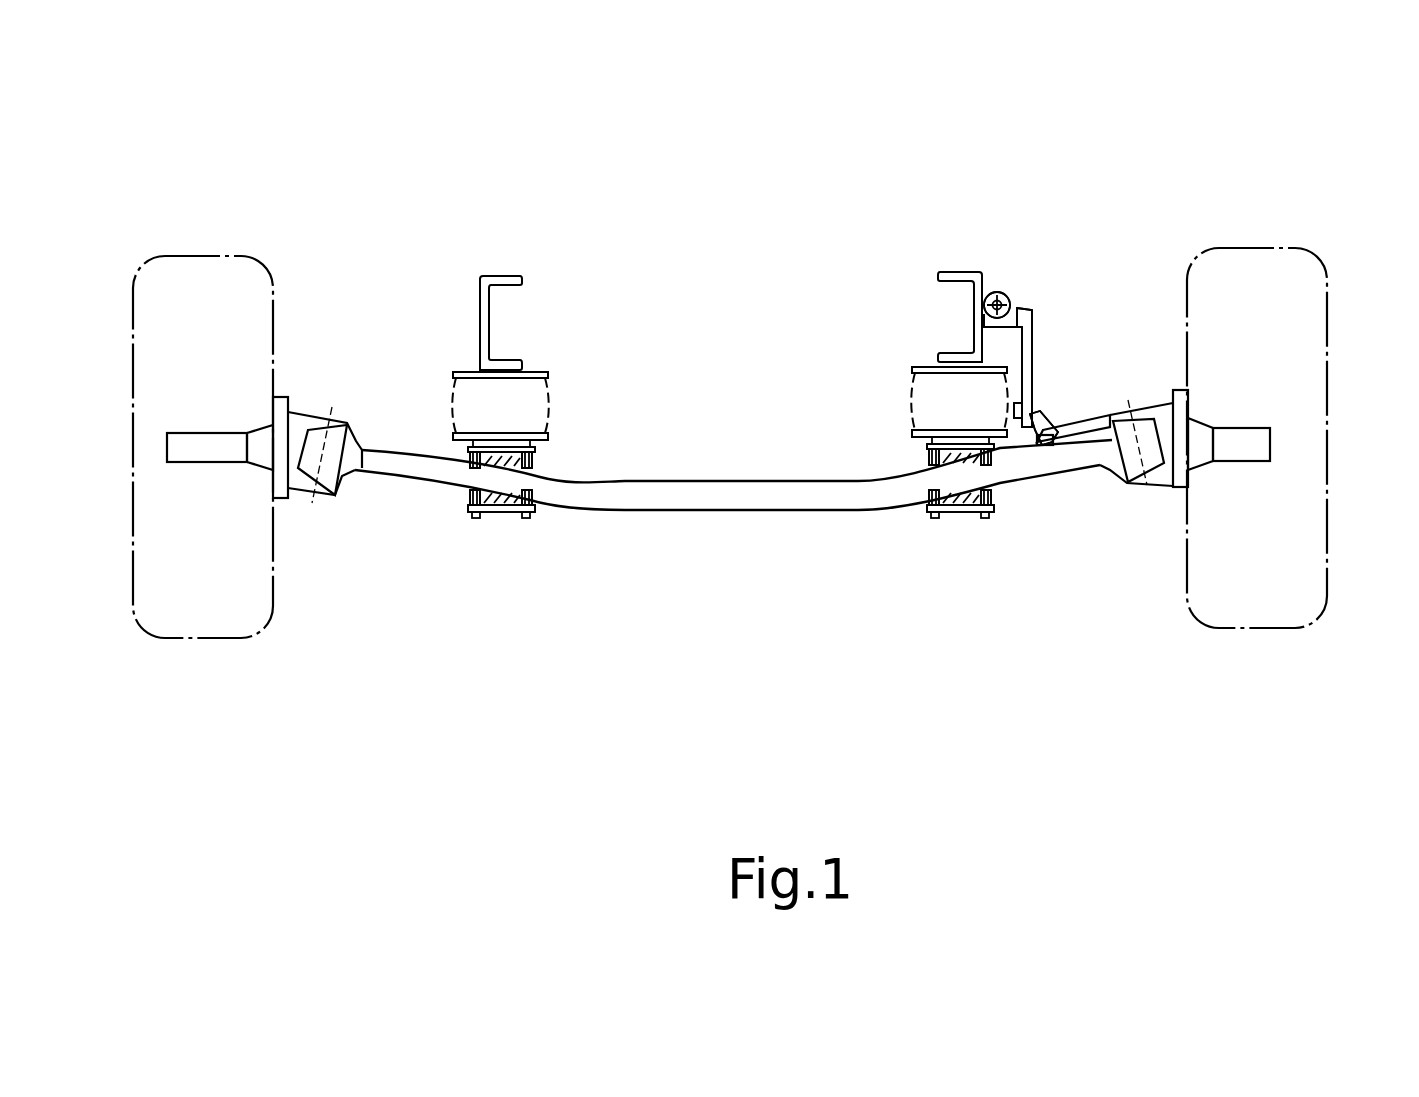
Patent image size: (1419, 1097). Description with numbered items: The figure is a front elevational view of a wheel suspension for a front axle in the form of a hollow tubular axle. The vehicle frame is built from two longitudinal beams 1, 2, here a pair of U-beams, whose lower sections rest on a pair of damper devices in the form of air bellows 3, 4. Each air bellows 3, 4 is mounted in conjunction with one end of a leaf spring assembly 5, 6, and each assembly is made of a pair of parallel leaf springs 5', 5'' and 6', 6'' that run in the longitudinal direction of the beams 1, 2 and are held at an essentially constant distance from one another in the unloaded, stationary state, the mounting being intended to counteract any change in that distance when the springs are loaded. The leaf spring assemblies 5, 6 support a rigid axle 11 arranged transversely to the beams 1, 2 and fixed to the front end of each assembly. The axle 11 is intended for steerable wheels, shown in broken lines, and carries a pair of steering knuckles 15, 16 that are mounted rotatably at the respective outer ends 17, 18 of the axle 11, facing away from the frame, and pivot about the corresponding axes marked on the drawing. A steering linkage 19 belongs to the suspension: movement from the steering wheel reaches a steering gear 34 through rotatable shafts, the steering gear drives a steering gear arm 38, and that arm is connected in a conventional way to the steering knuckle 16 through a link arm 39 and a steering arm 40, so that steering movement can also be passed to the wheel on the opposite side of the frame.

The longitudinal beam 1 is at (482, 287).
The longitudinal beam 2 is at (982, 283).
The air bellows 3 is at (462, 407).
The air bellows 4 is at (918, 405).
The leaf spring assembly 5 is at (525, 542).
The leaf spring 5' is at (452, 550).
The leaf spring 5'' is at (452, 599).
The leaf spring assembly 6 is at (935, 538).
The leaf spring 6' is at (1015, 539).
The leaf spring 6'' is at (1014, 592).
The rigid axle 11 is at (752, 495).
The steering knuckle 15 is at (262, 455).
The steering knuckle 16 is at (1205, 460).
The outer end of the axle 17 is at (333, 462).
The outer end of the axle 18 is at (1125, 450).
The steering linkage 19 is at (1082, 283).
The steering gear 34 is at (1013, 293).
The steering gear arm 38 is at (1033, 348).
The link arm 39 is at (1048, 423).
The steering arm 40 is at (1057, 428).